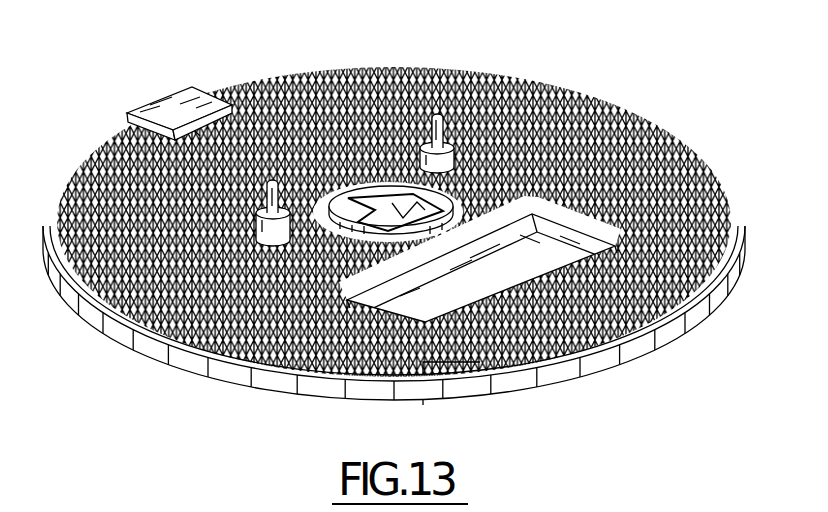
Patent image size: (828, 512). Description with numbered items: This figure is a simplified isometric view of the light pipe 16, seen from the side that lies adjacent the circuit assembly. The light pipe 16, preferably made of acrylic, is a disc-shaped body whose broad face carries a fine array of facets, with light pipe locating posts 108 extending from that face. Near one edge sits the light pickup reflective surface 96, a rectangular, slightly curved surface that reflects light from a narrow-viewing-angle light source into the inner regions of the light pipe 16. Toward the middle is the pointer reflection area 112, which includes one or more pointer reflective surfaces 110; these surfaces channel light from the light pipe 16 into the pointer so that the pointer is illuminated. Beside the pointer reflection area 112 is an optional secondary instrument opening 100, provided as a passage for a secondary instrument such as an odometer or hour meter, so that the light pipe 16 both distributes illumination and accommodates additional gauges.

The light pipe 16 is at (410, 232).
The light pickup reflective surface 96 is at (175, 93).
The secondary instrument opening 100 is at (407, 300).
The light pipe locating posts 108 is at (458, 102).
The pointer reflective surfaces 110 is at (368, 197).
The pointer reflection area 112 is at (330, 302).